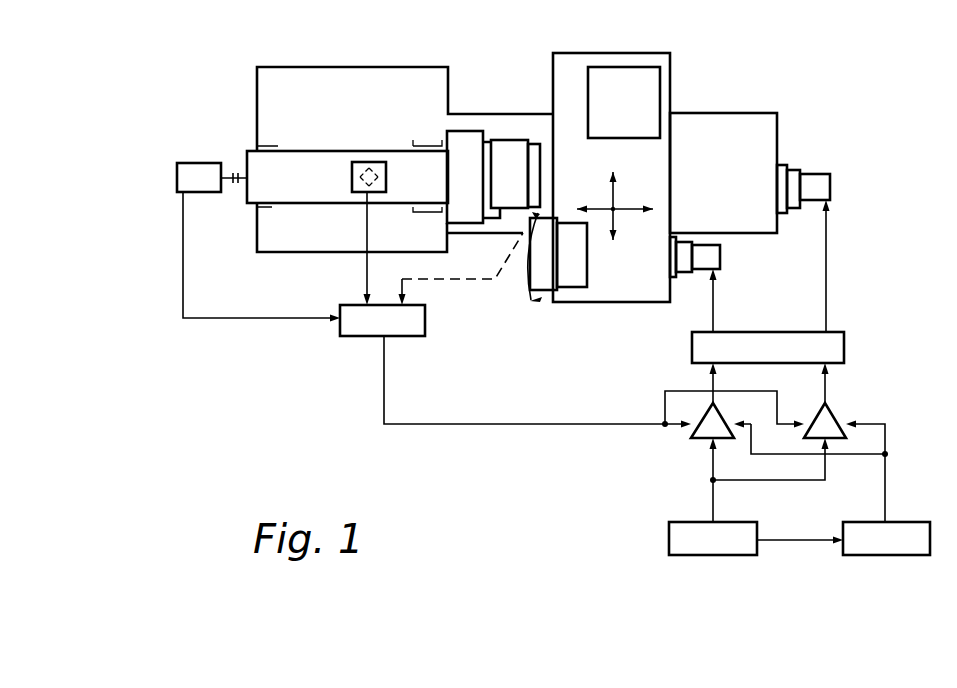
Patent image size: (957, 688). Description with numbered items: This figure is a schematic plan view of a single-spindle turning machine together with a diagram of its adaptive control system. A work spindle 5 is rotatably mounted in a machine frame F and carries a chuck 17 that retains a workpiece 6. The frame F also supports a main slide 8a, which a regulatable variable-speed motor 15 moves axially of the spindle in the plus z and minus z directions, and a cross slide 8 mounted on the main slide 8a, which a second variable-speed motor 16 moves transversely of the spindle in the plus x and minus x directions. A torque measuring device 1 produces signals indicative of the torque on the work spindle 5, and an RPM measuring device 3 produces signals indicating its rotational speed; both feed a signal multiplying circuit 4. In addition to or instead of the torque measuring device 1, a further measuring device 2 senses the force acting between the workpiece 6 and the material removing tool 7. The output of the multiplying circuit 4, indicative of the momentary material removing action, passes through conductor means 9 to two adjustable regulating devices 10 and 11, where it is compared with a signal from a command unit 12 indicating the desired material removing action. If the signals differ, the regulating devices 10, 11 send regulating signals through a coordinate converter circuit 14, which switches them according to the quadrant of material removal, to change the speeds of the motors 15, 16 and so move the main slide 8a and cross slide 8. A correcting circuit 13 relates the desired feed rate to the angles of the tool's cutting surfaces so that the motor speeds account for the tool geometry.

The machine frame F is at (299, 62).
The torque measuring device 1 is at (367, 160).
The further measuring device 2 is at (541, 276).
The RPM measuring device 3 is at (183, 182).
The signal multiplying circuit 4 is at (362, 340).
The work spindle 5 is at (282, 175).
The workpiece 6 is at (510, 146).
The material removing tool 7 is at (528, 220).
The cross slide 8 is at (568, 68).
The main slide 8a is at (735, 122).
The conductor means 9 is at (598, 424).
The adjustable regulating device 10 is at (705, 430).
The adjustable regulating device 11 is at (836, 415).
The command unit 12 is at (718, 546).
The correcting circuit 13 is at (868, 544).
The coordinate converter circuit 14 is at (838, 348).
The variable-speed motor 15 is at (830, 184).
The second variable-speed motor 16 is at (720, 257).
The chuck 17 is at (465, 145).